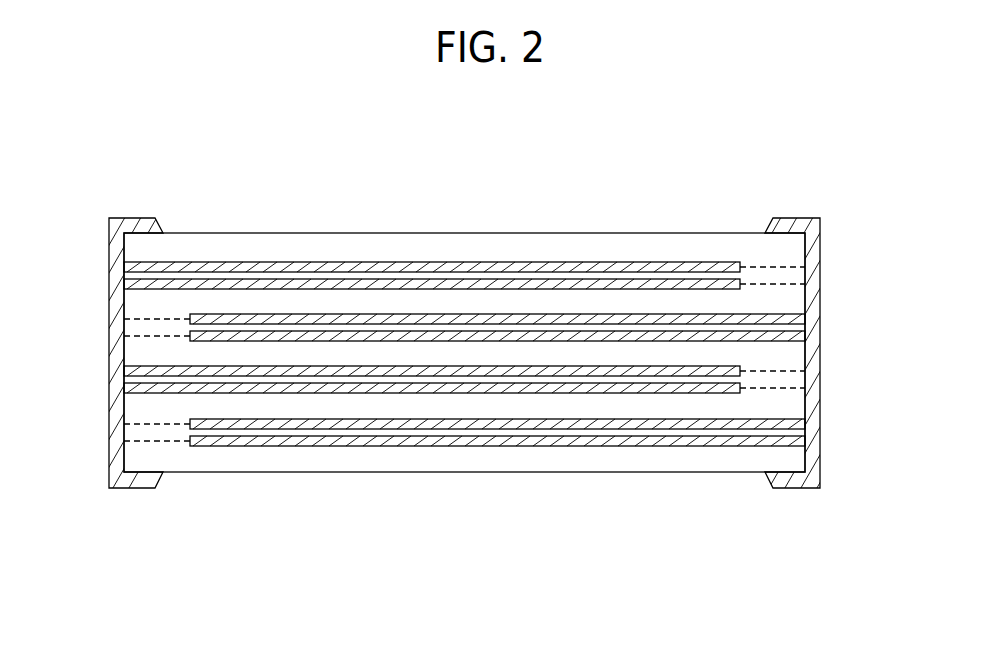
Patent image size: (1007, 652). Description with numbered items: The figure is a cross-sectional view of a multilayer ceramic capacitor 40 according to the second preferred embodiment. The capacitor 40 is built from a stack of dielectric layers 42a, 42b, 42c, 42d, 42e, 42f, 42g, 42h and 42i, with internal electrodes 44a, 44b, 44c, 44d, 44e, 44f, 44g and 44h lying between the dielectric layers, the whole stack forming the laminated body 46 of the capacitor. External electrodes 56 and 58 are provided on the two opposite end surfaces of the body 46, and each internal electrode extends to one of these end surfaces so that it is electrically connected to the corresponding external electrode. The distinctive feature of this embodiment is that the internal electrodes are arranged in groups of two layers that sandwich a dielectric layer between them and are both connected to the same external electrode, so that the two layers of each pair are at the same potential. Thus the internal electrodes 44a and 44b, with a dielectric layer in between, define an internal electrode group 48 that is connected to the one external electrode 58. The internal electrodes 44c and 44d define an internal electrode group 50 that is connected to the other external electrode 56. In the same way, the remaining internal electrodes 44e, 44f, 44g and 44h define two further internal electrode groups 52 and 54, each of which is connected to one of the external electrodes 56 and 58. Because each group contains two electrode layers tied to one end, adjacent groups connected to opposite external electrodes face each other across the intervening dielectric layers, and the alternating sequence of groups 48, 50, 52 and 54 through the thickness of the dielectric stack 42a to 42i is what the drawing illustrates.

The multilayer ceramic capacitor 40 is at (698, 612).
The dielectric layer 42a is at (357, 458).
The dielectric layer 42b is at (130, 433).
The dielectric layer 42c is at (130, 411).
The dielectric layer 42d is at (130, 381).
The dielectric layer 42e is at (130, 351).
The dielectric layer 42f is at (130, 325).
The dielectric layer 42g is at (130, 305).
The dielectric layer 42h is at (130, 276).
The dielectric layer 42i is at (480, 248).
The internal electrode 44a is at (505, 442).
The internal electrode 44b is at (568, 425).
The internal electrode 44c is at (732, 391).
The internal electrode 44d is at (722, 366).
The internal electrode 44e is at (768, 343).
The internal electrode 44f is at (766, 318).
The internal electrode 44g is at (578, 286).
The internal electrode 44h is at (645, 268).
The laminate body 46 is at (360, 226).
The internal electrode group 48 is at (604, 538).
The internal electrode group 50 is at (893, 363).
The internal electrode group 52 is at (893, 283).
The internal electrode group 54 is at (692, 171).
The external electrode 56 is at (118, 223).
The external electrode 58 is at (808, 224).